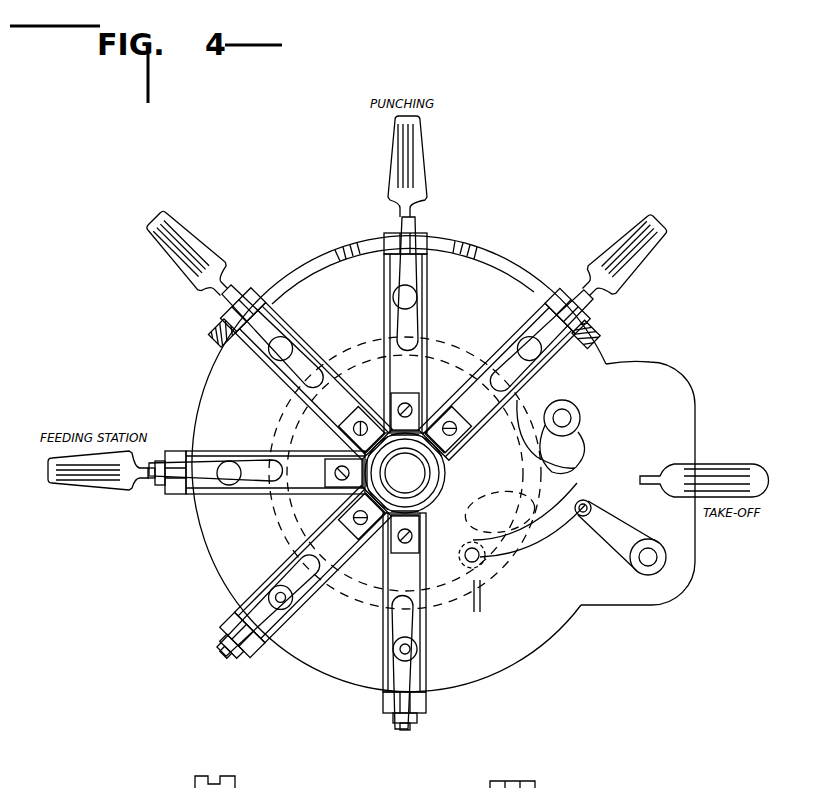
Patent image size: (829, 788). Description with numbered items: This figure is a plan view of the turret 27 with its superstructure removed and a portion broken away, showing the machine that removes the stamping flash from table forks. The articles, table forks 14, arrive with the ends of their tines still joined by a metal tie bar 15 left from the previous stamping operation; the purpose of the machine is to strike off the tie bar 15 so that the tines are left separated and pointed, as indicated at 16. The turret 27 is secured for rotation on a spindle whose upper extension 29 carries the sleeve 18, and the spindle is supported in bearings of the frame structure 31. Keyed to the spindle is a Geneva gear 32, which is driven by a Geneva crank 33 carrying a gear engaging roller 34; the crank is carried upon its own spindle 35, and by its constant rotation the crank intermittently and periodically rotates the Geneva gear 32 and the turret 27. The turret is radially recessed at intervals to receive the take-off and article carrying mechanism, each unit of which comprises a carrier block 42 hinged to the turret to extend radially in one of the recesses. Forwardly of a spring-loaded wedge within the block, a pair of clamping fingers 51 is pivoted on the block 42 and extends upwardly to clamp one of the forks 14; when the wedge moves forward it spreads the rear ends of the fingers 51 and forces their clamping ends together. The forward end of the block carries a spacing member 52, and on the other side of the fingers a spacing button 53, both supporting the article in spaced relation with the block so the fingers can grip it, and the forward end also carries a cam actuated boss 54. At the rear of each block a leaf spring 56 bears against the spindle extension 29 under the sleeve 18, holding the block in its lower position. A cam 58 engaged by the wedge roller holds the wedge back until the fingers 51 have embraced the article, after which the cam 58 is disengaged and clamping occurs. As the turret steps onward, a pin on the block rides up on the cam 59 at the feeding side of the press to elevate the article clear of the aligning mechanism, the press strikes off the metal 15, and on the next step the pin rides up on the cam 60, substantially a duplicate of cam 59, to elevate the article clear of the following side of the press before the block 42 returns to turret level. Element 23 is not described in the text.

The table forks 14 is at (700, 463).
The metal tie bar 15 is at (55, 478).
The separated and pointed tines 16 is at (748, 474).
The sleeve 18 is at (422, 405).
The die element 23 is at (538, 785).
The turret 27 is at (322, 665).
The upper extension of spindle 29 is at (405, 473).
The frame structure 31 is at (697, 402).
The Geneva gear 32 is at (475, 613).
The Geneva crank 33 is at (645, 366).
The gear engaging roller 34 is at (580, 407).
The crank spindle 35 is at (592, 426).
The carrier block 42 is at (425, 682).
The clamping fingers 51 is at (420, 706).
The spacing member 52 is at (397, 716).
The spacing button 53 is at (392, 652).
The cam actuated boss 54 is at (405, 732).
The leaf spring 56 is at (382, 400).
The cam 58 is at (503, 568).
The cam 59 is at (215, 330).
The cam 60 is at (485, 252).